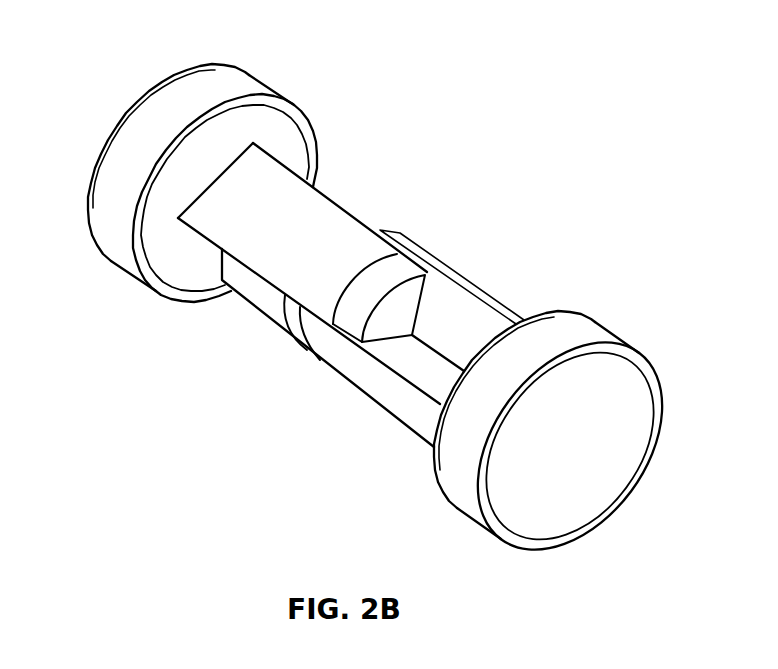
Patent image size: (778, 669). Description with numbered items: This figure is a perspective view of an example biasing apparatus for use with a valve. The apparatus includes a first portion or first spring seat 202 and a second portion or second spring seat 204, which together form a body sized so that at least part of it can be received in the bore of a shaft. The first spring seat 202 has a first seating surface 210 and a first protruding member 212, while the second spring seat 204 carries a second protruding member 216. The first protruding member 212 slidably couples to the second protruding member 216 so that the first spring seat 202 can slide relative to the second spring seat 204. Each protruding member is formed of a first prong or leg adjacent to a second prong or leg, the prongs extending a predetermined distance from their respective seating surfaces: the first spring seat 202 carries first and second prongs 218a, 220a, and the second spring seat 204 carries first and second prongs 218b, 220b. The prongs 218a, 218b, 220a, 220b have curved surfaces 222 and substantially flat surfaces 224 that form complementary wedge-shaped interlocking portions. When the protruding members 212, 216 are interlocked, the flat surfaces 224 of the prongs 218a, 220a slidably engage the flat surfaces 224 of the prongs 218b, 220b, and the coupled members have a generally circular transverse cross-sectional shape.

The first spring seat 202 is at (188, 87).
The second spring seat 204 is at (457, 477).
The first seating surface 210 is at (277, 132).
The first protruding member 212 is at (240, 300).
The second protruding member 216 is at (435, 278).
The first prong 218a is at (347, 210).
The first prong 218b is at (507, 317).
The second prong 220a is at (263, 300).
The second prong 220b is at (394, 416).
The curved surface 222 is at (262, 233).
The flat surface 224 is at (438, 300).